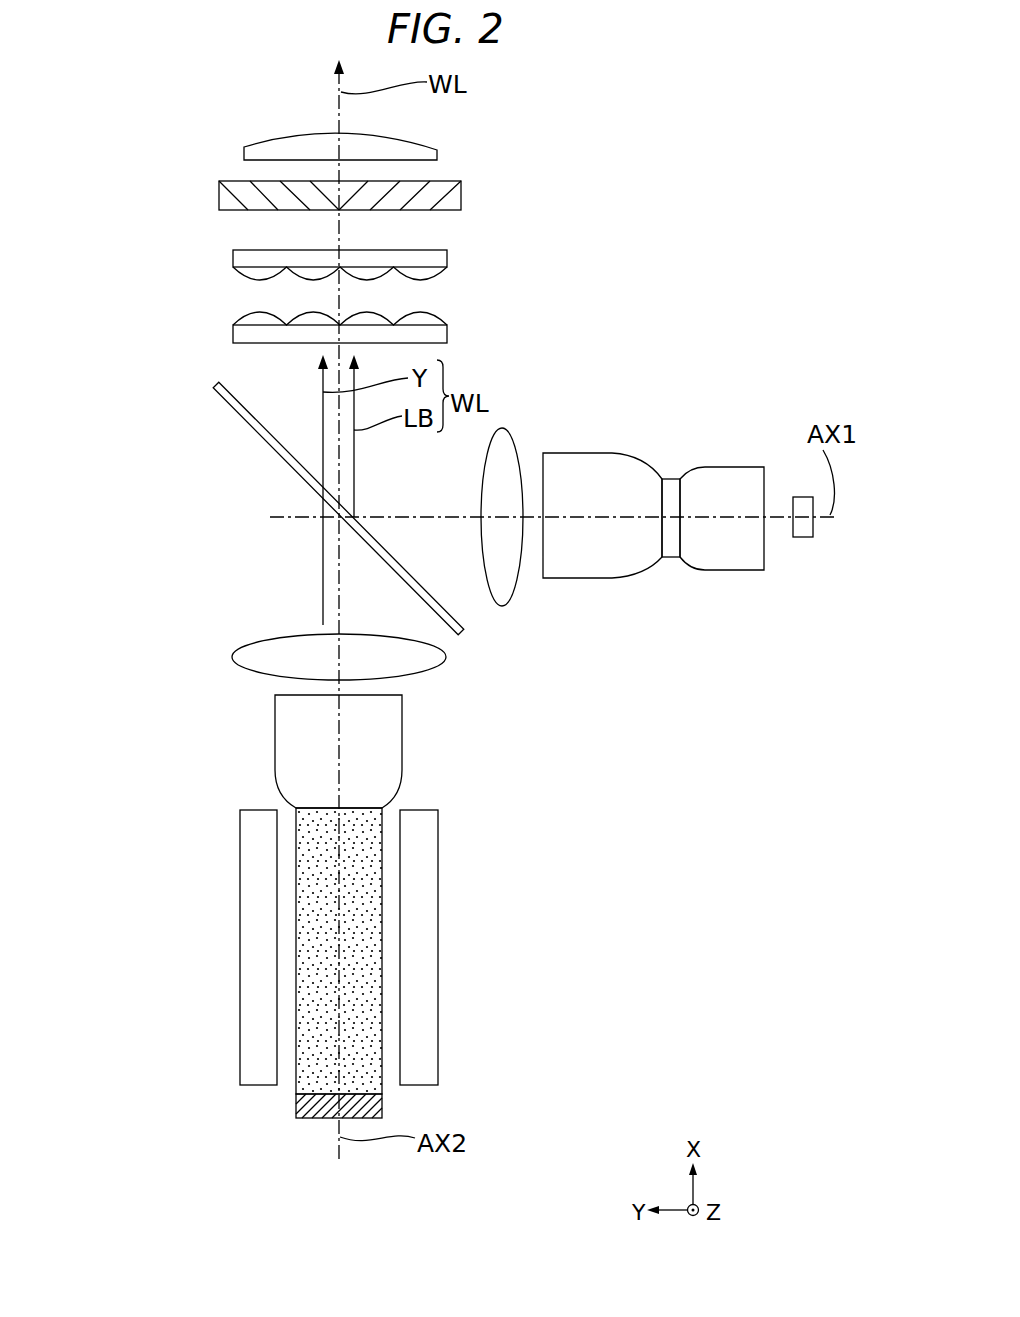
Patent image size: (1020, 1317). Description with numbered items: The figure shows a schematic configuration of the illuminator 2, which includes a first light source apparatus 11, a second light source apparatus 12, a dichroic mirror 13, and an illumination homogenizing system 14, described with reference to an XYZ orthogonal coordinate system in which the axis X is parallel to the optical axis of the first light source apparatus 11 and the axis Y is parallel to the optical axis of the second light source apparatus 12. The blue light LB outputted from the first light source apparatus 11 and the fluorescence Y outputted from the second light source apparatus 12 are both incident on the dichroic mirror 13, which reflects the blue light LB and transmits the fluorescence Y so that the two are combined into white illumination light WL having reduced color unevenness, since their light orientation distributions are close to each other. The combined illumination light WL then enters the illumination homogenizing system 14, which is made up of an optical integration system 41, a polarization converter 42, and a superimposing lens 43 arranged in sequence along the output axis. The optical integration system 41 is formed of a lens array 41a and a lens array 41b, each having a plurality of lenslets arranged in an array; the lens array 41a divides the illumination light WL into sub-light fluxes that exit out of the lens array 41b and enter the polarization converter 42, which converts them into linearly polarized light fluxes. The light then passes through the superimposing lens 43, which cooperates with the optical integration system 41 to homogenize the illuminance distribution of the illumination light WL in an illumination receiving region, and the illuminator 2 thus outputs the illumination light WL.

The illuminator 2 is at (714, 255).
The first light source apparatus 11 is at (669, 620).
The second light source apparatus 12 is at (500, 939).
The dichroic mirror 13 is at (248, 428).
The illumination homogenizing system 14 is at (97, 148).
The optical integration system 41 is at (150, 265).
The lens array 41a is at (235, 322).
The lens array 41b is at (235, 277).
The polarization converter 42 is at (219, 195).
The superimposing lens 43 is at (257, 139).